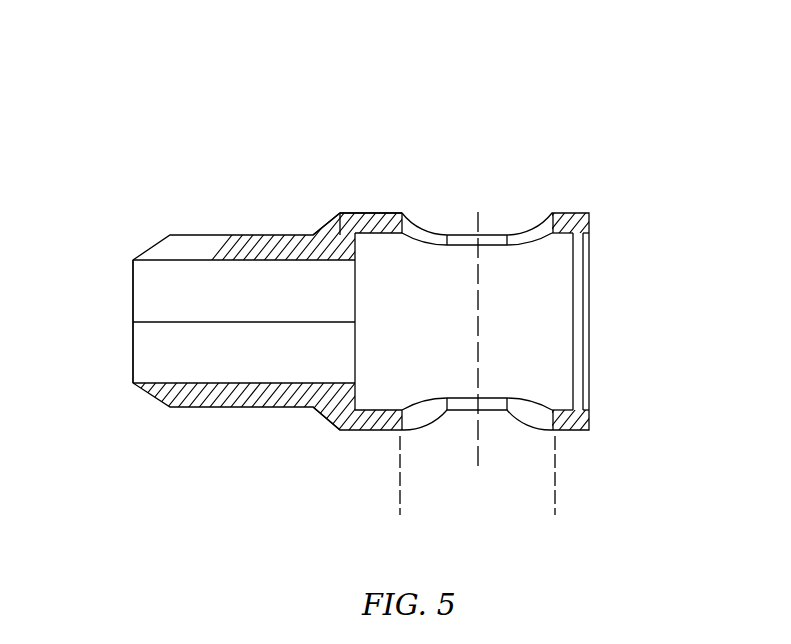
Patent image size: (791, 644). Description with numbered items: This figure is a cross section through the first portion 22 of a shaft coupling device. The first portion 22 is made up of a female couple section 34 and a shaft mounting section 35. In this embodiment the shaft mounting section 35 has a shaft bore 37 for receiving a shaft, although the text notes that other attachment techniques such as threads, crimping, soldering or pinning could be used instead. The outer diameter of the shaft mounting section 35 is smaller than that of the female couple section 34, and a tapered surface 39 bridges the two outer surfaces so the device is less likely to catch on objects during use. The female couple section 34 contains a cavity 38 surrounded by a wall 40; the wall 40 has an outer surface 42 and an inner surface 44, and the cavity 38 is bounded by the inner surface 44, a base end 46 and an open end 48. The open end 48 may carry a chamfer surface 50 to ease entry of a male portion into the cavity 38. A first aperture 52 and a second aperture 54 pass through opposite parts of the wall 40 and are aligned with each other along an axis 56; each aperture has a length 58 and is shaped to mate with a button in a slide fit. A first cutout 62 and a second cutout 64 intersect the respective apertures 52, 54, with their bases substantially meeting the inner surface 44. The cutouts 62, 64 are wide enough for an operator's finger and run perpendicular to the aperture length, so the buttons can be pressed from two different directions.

The first portion 22 is at (412, 74).
The female couple section 34 is at (353, 160).
The shaft mounting section 35 is at (133, 197).
The shaft bore 37 is at (140, 355).
The cavity 38 is at (498, 360).
The tapered surface 39 is at (320, 414).
The wall 40 is at (578, 212).
The outer surface 42 is at (370, 212).
The inner surface 44 is at (562, 233).
The base end 46 is at (356, 250).
The open end 48 is at (590, 337).
The chamfer surface 50 is at (590, 407).
The first aperture 52 is at (427, 418).
The second aperture 54 is at (532, 224).
The axis 56 is at (478, 372).
The length 58 is at (555, 510).
The first cutout 62 is at (462, 410).
The second cutout 64 is at (496, 243).